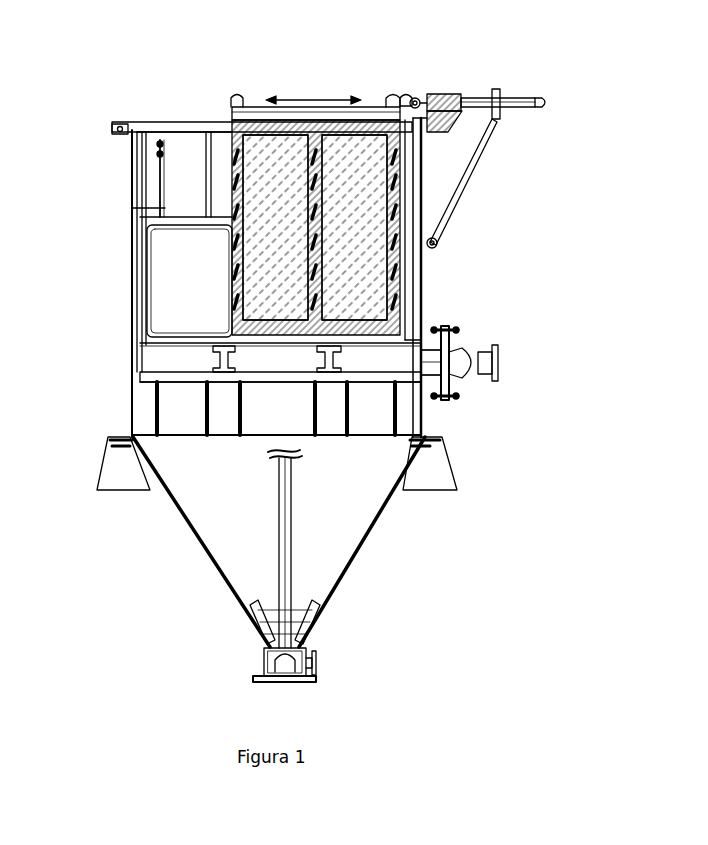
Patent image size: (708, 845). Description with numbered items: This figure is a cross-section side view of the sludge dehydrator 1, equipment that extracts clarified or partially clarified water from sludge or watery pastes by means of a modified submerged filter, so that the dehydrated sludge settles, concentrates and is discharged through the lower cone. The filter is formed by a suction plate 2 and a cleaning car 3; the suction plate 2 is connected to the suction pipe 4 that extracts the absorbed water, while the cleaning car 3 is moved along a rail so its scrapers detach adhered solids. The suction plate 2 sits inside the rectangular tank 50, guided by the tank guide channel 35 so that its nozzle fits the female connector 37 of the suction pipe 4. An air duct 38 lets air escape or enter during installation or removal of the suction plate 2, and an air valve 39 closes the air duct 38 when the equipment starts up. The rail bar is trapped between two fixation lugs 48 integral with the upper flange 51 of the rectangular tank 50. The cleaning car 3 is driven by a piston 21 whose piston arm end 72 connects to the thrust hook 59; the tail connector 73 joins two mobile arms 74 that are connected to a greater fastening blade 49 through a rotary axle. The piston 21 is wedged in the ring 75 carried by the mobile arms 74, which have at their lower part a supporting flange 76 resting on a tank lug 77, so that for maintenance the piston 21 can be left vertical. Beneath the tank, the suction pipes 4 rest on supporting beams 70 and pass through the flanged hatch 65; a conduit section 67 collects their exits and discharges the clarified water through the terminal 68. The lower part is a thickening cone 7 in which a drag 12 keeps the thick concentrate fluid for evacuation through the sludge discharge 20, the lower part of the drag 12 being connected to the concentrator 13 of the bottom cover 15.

The sludge dehydrator 1 is at (132, 290).
The suction plate 2 is at (168, 270).
The cleaning car 3 is at (367, 253).
The suction pipe 4 is at (140, 377).
The thickening cone 7 is at (363, 532).
The drag 12 is at (252, 617).
The concentrator 13 is at (266, 666).
The bottom cover 15 is at (300, 682).
The sludge discharge 20 is at (318, 660).
The piston 21 is at (440, 96).
The tank guide channel 35 is at (130, 250).
The female connector 37 is at (215, 361).
The air duct 38 is at (132, 208).
The air valve 39 is at (167, 152).
The fixation lugs 48 is at (119, 124).
The fastening blade 49 is at (452, 130).
The rectangular tank 50 is at (135, 397).
The upper flange 51 is at (112, 134).
The thrust hook 59 is at (406, 98).
The flanged hatch 65 is at (460, 352).
The conduit section 67 is at (465, 375).
The terminal 68 is at (498, 362).
The supporting beams 70 is at (240, 405).
The piston arm end 72 is at (415, 97).
The tail connector 73 is at (543, 104).
The mobile arms 74 is at (480, 98).
The ring 75 is at (500, 92).
The supporting flange 76 is at (470, 180).
The tank lug 77 is at (440, 243).